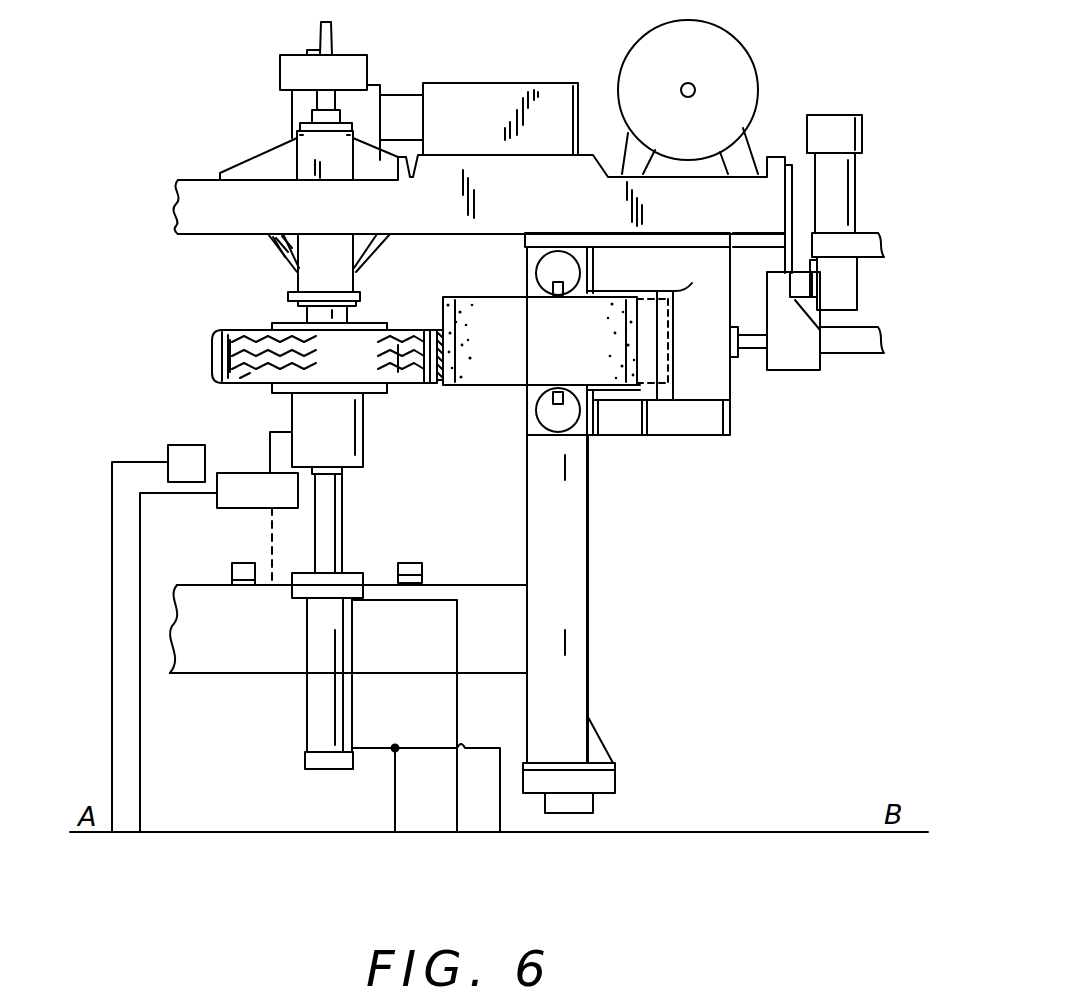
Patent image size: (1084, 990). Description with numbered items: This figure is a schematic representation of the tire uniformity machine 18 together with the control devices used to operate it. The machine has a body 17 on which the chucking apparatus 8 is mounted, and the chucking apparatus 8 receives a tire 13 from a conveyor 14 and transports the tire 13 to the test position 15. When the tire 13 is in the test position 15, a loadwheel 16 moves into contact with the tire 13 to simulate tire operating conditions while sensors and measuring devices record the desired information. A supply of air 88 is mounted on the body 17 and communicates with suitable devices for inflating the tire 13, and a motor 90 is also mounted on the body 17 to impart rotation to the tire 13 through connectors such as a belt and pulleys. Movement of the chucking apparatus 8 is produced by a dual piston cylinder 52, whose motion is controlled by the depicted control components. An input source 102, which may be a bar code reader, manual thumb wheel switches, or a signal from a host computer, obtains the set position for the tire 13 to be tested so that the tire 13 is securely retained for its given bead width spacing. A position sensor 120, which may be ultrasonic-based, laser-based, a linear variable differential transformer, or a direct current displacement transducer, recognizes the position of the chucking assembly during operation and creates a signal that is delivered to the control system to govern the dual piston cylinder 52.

The chucking apparatus 8 is at (202, 313).
The tire 13 is at (247, 373).
The conveyor 14 is at (243, 570).
The test position 15 is at (180, 350).
The loadwheel 16 is at (540, 341).
The body 17 is at (197, 203).
The tire uniformity machine 18 is at (656, 450).
The dual piston cylinder 52 is at (323, 712).
The supply of air 88 is at (723, 50).
The motor 90 is at (497, 110).
The input source 102 is at (182, 452).
The position sensor 120 is at (237, 482).